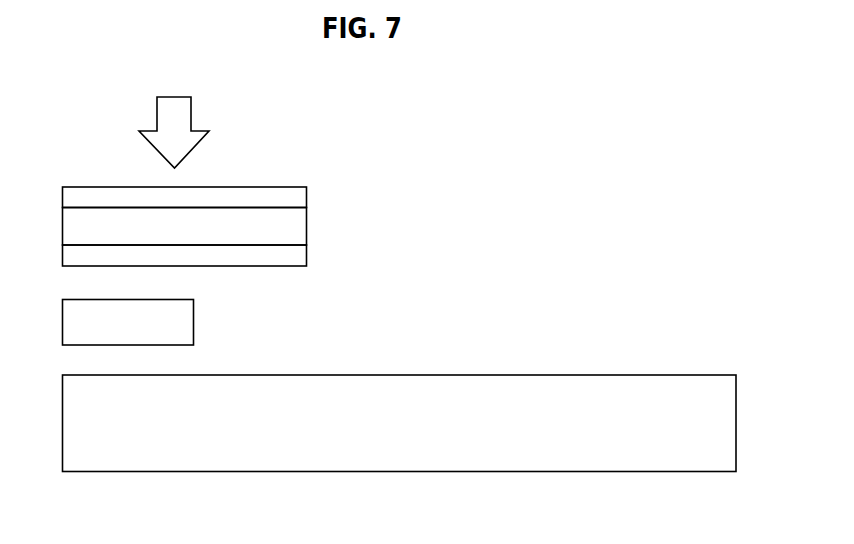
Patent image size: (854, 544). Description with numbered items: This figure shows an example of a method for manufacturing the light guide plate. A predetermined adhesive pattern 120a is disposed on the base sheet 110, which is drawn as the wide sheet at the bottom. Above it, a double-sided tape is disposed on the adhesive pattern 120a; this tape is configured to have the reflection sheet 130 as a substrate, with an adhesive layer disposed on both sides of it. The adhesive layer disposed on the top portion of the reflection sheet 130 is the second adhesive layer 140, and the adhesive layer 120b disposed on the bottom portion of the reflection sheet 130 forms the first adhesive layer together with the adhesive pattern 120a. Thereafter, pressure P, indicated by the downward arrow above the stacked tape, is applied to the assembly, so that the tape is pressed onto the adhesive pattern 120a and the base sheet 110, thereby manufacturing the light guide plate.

The pressure P is at (174, 116).
The second adhesive layer 140 is at (298, 195).
The reflection sheet 130 is at (298, 225).
The adhesive layer 120b is at (298, 253).
The adhesive pattern 120a is at (179, 323).
The base sheet 110 is at (470, 390).